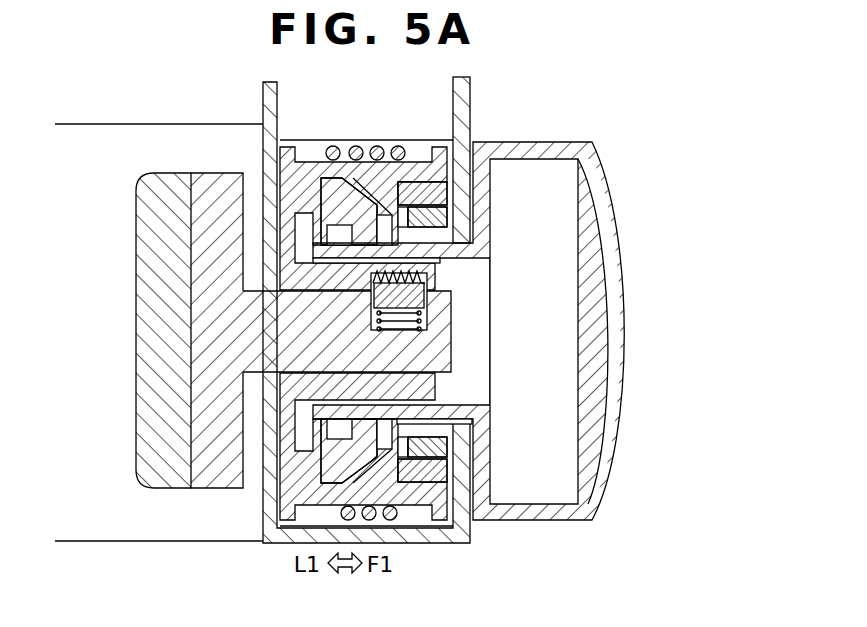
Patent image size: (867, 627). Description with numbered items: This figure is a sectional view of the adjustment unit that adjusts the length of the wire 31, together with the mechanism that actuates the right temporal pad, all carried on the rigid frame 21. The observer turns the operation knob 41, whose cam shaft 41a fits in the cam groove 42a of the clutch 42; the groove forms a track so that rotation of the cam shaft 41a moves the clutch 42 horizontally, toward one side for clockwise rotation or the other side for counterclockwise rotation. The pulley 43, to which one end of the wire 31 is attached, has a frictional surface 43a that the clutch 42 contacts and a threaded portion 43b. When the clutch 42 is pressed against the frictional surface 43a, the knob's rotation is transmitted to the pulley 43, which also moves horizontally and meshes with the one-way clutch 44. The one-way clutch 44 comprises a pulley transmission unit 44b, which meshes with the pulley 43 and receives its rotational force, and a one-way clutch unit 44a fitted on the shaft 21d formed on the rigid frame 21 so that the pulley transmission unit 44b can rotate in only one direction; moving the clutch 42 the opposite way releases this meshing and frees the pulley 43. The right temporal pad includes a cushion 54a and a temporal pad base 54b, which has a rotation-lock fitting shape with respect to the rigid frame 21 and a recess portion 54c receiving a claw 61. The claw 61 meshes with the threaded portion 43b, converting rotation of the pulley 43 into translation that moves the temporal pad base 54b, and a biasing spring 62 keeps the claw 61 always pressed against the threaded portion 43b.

The rigid frame 21 is at (465, 122).
The shaft 21d is at (465, 427).
The wire 31 is at (338, 150).
The operation knob 41 is at (612, 298).
The cam shaft 41a is at (370, 445).
The clutch 42 is at (352, 195).
The cam groove 42a is at (342, 428).
The pulley 43 is at (432, 167).
The frictional surface 43a is at (374, 190).
The threaded portion 43b is at (423, 272).
The one-way clutch 44 is at (575, 307).
The one-way clutch unit 44a is at (437, 220).
The pulley transmission unit 44b is at (440, 195).
The cushion 54a is at (163, 307).
The temporal pad base 54b is at (207, 250).
The recess portion 54c is at (372, 316).
The claw 61 is at (410, 300).
The biasing spring 62 is at (428, 322).